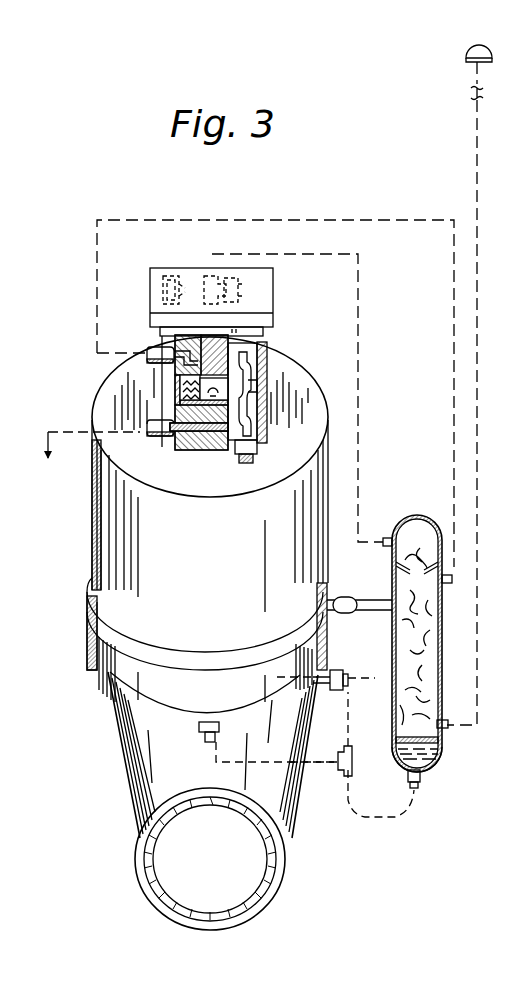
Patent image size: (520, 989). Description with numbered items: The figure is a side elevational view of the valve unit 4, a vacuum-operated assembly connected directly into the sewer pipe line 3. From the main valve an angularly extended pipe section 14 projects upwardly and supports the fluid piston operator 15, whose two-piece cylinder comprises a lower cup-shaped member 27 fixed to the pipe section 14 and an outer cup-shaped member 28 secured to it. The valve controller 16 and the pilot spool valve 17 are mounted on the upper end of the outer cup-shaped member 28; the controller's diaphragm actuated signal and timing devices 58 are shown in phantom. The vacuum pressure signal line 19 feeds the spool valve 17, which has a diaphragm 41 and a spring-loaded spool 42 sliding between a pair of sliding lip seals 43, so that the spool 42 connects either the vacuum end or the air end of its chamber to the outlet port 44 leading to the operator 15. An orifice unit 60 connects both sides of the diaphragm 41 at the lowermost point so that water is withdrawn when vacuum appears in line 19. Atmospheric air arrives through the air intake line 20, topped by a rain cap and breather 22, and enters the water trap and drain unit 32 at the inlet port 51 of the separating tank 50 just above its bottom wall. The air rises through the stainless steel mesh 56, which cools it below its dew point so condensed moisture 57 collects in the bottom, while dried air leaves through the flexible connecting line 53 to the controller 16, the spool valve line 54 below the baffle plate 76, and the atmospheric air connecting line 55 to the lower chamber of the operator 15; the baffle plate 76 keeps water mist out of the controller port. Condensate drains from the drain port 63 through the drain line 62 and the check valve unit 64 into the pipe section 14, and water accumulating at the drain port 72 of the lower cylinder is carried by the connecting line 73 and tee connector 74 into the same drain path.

The sewer pipe line 3 is at (283, 868).
The valve unit 4 is at (277, 204).
The angularly extended pipe section 14 is at (124, 757).
The fluid piston operator 15 is at (90, 560).
The valve controller 16 is at (146, 275).
The pilot spool valve 17 is at (170, 336).
The vacuum pressure signal line 19 is at (160, 438).
The air intake line 20 is at (477, 178).
The rain cap and breather 22 is at (468, 55).
The lower cup-shaped member 27 is at (90, 657).
The outer cup-shaped member 28 is at (92, 532).
The water trap and drain unit 32 is at (417, 513).
The diaphragm 41 is at (258, 428).
The spring-loaded spool 42 is at (226, 388).
The sliding lip seals 43 is at (180, 405).
The outlet port 44 is at (217, 391).
The separating tank 50 is at (437, 771).
The inlet opening or port 51 is at (448, 729).
The flexible connecting line 53 is at (358, 368).
The spool valve line 54 is at (453, 401).
The atmospheric air connecting line 55 is at (367, 598).
The stainless steel mesh 56 is at (428, 648).
The condensed moisture 57 is at (420, 780).
The diaphragm actuated signal and timing devices 58 is at (205, 274).
The orifice unit 60 is at (256, 462).
The drain line 62 is at (386, 827).
The drain port 63 is at (418, 788).
The check valve unit 64 is at (346, 671).
The drain port 72 is at (205, 734).
The connecting line 73 is at (303, 768).
The tee connector 74 is at (338, 757).
The baffle plate 76 is at (452, 579).